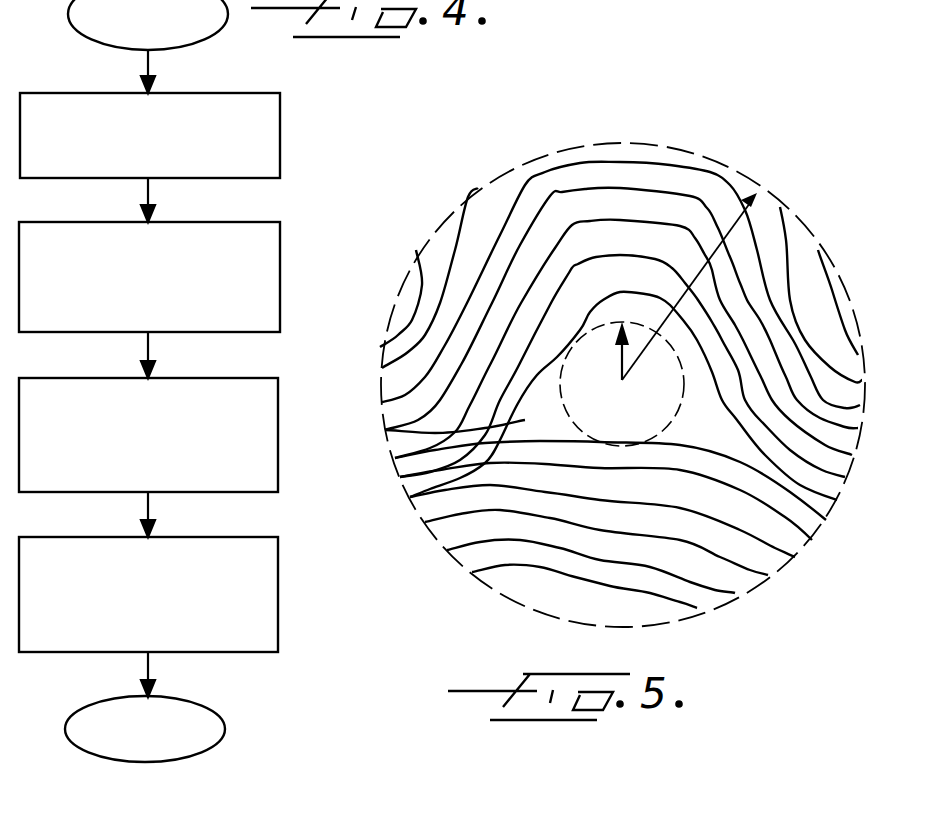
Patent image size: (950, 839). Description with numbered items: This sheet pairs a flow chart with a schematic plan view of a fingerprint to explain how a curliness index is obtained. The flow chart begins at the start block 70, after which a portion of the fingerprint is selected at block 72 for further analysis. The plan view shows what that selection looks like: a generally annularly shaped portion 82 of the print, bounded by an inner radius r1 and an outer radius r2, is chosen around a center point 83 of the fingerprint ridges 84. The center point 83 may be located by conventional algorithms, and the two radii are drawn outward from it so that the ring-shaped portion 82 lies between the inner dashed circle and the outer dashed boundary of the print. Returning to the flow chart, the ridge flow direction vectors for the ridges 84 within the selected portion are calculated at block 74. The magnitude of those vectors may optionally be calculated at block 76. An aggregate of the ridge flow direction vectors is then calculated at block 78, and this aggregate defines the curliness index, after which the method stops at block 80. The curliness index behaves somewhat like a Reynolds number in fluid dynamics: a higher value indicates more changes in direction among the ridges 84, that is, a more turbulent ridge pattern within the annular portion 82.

In FIG. 4, the start block 70 is at (222, 28).
In FIG. 4, the select portion block 72 is at (280, 126).
In FIG. 4, the calculate ridge flow direction vectors block 74 is at (280, 238).
In FIG. 4, the calculate magnitude of vectors block 76 is at (278, 462).
In FIG. 4, the aggregate direction block 78 is at (278, 580).
In FIG. 4, the stop block 80 is at (225, 728).
In FIG. 5, the annularly shaped portion 82 is at (812, 291).
In FIG. 5, the center point 83 is at (622, 378).
In FIG. 5, the fingerprint ridges 84 is at (658, 222).
In FIG. 5, the inner radius r1 is at (620, 363).
In FIG. 5, the outer radius r2 is at (693, 265).